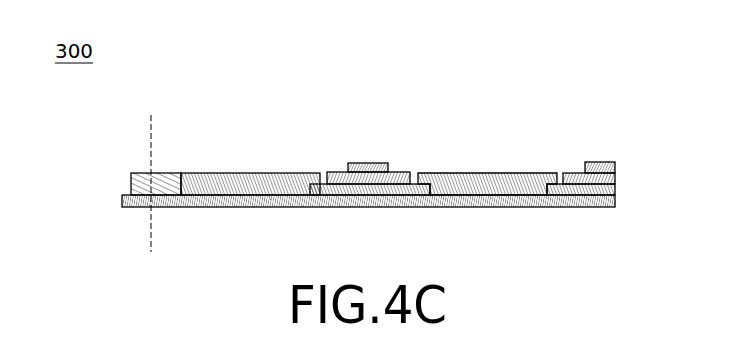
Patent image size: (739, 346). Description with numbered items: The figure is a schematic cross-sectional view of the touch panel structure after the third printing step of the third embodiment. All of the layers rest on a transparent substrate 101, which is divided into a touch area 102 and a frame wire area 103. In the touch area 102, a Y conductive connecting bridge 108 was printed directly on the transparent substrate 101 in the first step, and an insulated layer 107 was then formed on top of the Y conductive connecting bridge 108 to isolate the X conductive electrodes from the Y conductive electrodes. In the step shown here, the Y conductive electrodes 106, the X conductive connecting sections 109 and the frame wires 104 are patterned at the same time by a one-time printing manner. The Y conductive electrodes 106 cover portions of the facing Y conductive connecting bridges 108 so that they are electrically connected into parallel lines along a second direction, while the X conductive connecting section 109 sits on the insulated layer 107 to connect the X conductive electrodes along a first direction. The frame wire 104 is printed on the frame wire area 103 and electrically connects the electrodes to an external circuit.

The transparent substrate 101 is at (572, 207).
The touch area 102 is at (283, 136).
The frame wire area 103 is at (133, 136).
The frame wire 104 is at (170, 173).
The Y conductive electrode 106 is at (247, 173).
The insulated layer 107 is at (398, 173).
The Y conductive connecting bridge 108 is at (357, 163).
The X conductive connecting section 109 is at (375, 163).